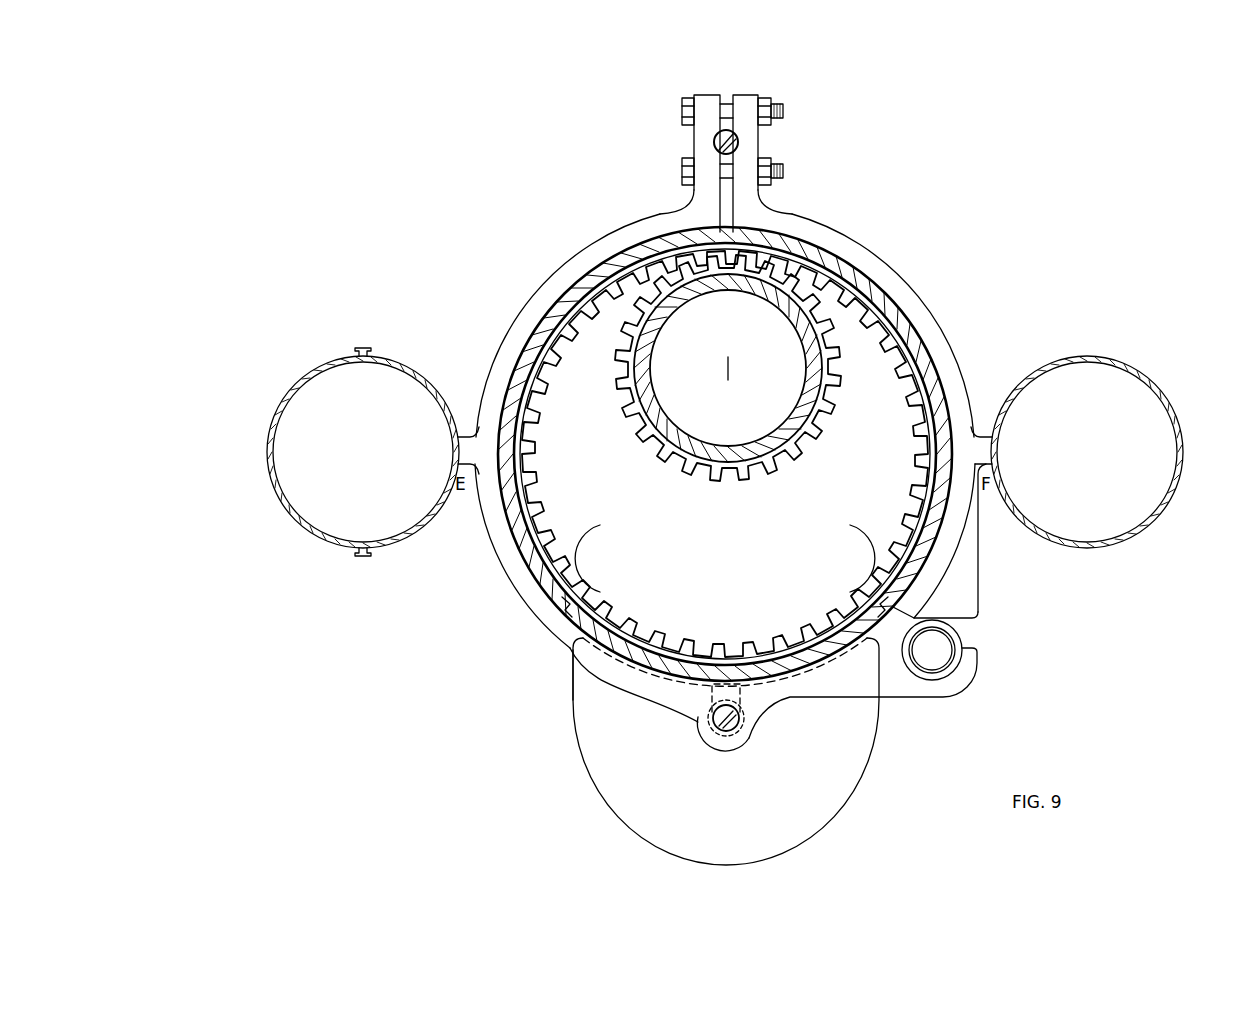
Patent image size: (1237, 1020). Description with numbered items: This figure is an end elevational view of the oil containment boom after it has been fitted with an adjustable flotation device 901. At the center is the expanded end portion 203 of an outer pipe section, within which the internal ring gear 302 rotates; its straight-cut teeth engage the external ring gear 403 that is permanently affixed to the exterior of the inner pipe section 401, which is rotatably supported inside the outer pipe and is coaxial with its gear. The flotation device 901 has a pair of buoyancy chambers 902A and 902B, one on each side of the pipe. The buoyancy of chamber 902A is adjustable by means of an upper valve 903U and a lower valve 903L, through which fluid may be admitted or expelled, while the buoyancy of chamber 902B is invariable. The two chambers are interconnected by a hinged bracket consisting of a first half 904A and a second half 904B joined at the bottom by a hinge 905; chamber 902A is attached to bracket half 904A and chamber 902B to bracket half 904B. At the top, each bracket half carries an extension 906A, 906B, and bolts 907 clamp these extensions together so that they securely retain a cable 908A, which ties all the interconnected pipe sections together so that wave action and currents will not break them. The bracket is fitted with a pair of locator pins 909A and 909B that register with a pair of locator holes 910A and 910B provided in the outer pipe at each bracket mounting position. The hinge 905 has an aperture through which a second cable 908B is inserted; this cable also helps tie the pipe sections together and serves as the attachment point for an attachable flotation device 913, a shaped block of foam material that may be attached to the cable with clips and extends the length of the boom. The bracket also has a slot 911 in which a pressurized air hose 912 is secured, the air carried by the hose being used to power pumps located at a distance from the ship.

The expanded end portion 203 is at (858, 254).
The internal ring gear 302 is at (834, 360).
The inner pipe section 401 is at (605, 265).
The external ring gear 403 is at (820, 342).
The adjustable flotation device 901 is at (544, 654).
The buoyancy chamber 902A is at (315, 528).
The buoyancy chamber 902B is at (1142, 527).
The upper valve 903U is at (361, 350).
The lower valve 903L is at (361, 556).
The first half of hinged bracket 904A is at (552, 282).
The second half of hinged bracket 904B is at (903, 288).
The hinge 905 is at (708, 728).
The extension 906A is at (705, 112).
The extension 906B is at (746, 112).
The bolts 907 is at (682, 172).
The cable 908A is at (738, 142).
The second cable 908B is at (737, 728).
The locator pin 909A is at (566, 610).
The locator pin 909B is at (893, 607).
The locator hole 910A is at (566, 580).
The locator hole 910B is at (905, 535).
The slot 911 is at (970, 624).
The pressurized air hose 912 is at (915, 680).
The attachable flotation device 913 is at (742, 826).